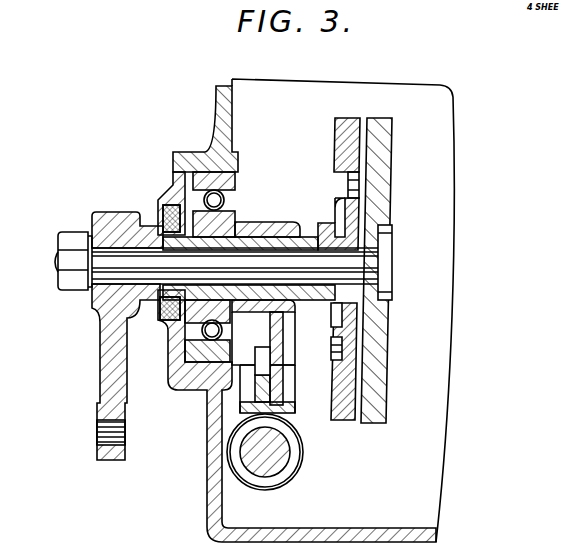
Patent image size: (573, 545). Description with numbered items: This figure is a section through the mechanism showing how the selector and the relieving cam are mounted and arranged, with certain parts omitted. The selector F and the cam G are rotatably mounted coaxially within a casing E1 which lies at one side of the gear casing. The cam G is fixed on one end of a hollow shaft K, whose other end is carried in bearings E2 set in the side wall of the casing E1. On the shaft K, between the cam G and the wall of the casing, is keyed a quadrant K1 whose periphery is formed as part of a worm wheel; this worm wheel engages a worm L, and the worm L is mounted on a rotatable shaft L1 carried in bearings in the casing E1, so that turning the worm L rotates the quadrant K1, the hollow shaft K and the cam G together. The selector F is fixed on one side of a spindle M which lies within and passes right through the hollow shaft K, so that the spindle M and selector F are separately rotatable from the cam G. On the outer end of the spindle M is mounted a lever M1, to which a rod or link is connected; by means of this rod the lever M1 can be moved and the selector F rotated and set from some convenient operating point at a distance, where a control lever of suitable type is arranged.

The casing E1 is at (206, 498).
The bearings E2 is at (183, 188).
The selector F is at (387, 122).
The cam G is at (350, 118).
The hollow shaft K is at (313, 245).
The quadrant K1 is at (245, 413).
The worm L is at (297, 448).
The rotatable shaft L1 is at (290, 467).
The spindle M is at (390, 268).
The lever M1 is at (112, 363).